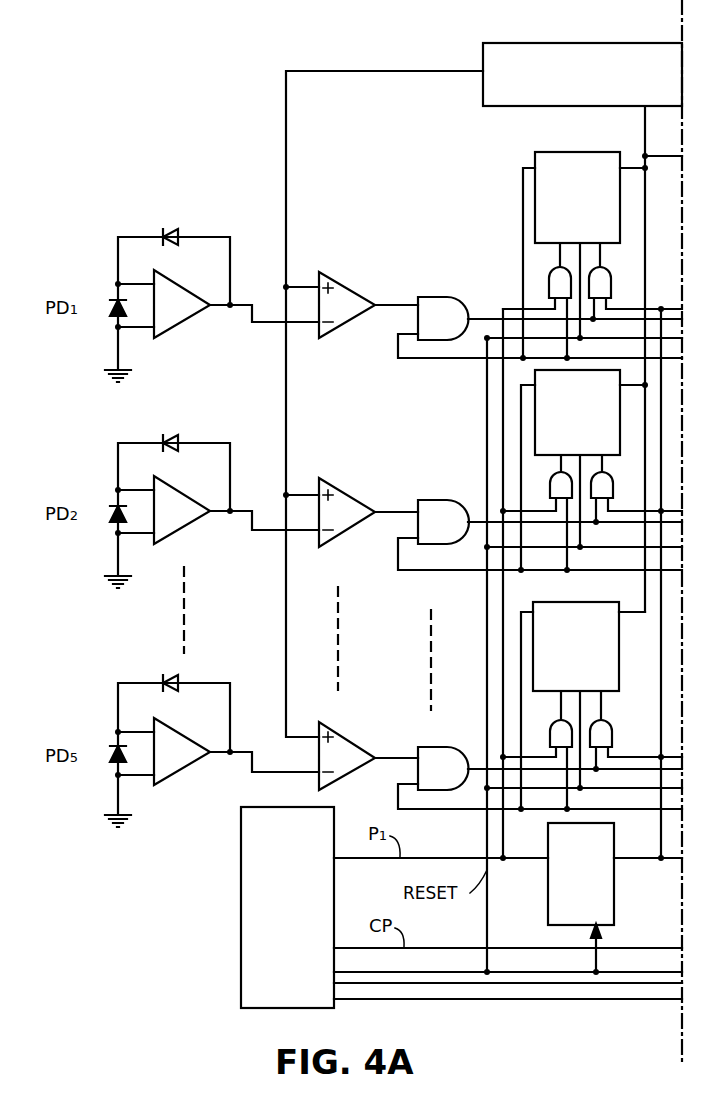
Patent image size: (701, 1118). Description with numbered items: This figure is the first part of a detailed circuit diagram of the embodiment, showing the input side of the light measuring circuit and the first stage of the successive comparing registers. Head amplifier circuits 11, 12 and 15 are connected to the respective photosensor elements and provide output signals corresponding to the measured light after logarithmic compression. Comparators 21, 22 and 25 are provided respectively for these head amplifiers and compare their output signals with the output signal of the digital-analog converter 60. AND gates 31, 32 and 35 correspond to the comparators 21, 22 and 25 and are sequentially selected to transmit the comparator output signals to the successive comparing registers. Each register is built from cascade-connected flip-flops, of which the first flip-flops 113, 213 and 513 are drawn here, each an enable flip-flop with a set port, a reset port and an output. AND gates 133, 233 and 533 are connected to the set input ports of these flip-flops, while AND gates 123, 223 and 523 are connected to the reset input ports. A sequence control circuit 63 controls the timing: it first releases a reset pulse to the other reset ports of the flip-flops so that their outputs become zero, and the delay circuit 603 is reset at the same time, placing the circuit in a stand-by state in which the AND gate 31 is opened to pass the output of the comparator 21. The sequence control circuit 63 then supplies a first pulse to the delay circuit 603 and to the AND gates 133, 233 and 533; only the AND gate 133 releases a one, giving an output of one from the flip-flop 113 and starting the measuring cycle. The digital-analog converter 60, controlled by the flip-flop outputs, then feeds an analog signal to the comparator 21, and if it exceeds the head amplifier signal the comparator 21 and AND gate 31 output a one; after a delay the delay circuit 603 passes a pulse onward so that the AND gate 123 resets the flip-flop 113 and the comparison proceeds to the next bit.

The head amplifier circuit 11 is at (182, 322).
The head amplifier circuit 12 is at (182, 528).
The head amplifier circuit 15 is at (182, 770).
The comparator 21 is at (343, 282).
The comparator 22 is at (343, 490).
The comparator 25 is at (343, 735).
The AND gate 31 is at (428, 297).
The AND gate 32 is at (428, 500).
The AND gate 35 is at (428, 746).
The digital-analog converter 60 is at (577, 43).
The sequence control circuit 63 is at (241, 867).
The flip-flop 113 is at (559, 152).
The flip-flop 213 is at (534, 372).
The flip-flop 513 is at (568, 602).
The AND gate 133 is at (549, 270).
The AND gate 233 is at (550, 476).
The AND gate 533 is at (550, 722).
The AND gate 123 is at (611, 272).
The AND gate 223 is at (613, 478).
The AND gate 523 is at (612, 724).
The delay circuit 603 is at (614, 897).